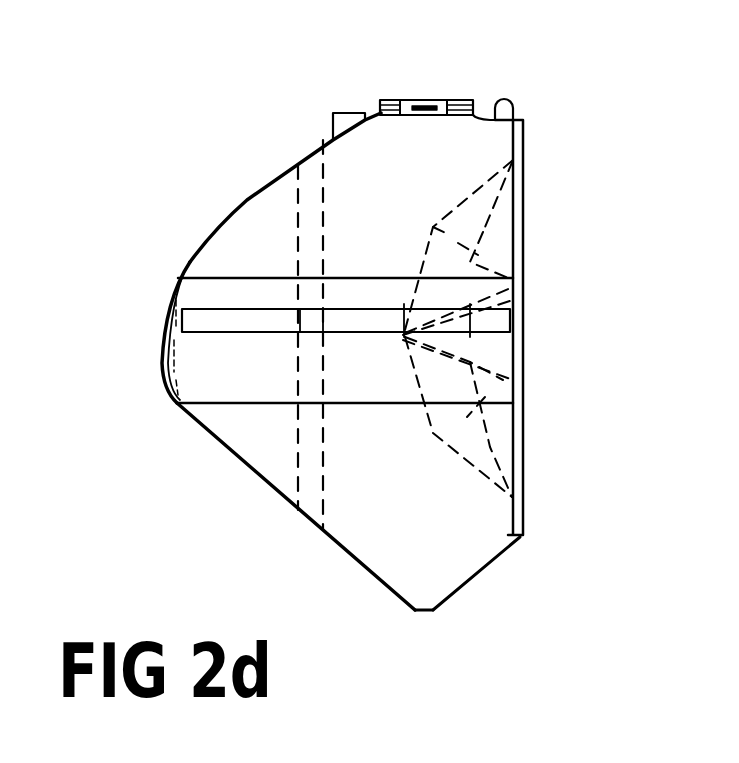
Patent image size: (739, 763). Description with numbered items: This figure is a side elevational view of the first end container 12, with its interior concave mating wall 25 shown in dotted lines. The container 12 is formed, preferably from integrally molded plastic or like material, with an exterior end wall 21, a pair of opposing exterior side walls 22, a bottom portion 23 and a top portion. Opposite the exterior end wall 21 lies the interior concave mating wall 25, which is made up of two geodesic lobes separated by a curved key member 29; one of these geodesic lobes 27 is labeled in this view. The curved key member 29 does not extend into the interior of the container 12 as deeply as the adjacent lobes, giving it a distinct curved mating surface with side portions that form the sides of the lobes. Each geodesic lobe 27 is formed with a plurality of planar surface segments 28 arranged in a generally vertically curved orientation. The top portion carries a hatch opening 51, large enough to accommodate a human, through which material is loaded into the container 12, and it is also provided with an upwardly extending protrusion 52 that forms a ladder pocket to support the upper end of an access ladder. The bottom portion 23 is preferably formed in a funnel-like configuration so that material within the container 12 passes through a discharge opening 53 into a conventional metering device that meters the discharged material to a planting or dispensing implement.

The first end container 12 is at (258, 103).
The exterior end wall 21 is at (189, 260).
The exterior side wall 22 is at (352, 207).
The bottom portion 23 is at (487, 567).
The interior concave mating wall 25 is at (553, 313).
The geodesic lobe 27 is at (508, 378).
The planar surface segment 28 is at (425, 0).
The curved key member 29 is at (483, 230).
The hatch opening 51 is at (408, 100).
The upwardly extending protrusion 52 is at (507, 100).
The discharge opening 53 is at (415, 612).